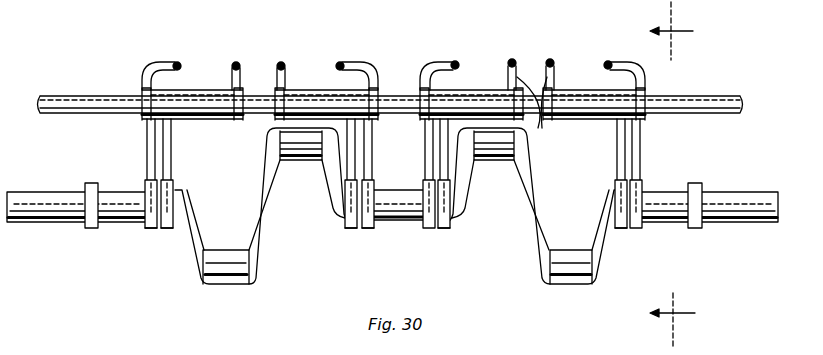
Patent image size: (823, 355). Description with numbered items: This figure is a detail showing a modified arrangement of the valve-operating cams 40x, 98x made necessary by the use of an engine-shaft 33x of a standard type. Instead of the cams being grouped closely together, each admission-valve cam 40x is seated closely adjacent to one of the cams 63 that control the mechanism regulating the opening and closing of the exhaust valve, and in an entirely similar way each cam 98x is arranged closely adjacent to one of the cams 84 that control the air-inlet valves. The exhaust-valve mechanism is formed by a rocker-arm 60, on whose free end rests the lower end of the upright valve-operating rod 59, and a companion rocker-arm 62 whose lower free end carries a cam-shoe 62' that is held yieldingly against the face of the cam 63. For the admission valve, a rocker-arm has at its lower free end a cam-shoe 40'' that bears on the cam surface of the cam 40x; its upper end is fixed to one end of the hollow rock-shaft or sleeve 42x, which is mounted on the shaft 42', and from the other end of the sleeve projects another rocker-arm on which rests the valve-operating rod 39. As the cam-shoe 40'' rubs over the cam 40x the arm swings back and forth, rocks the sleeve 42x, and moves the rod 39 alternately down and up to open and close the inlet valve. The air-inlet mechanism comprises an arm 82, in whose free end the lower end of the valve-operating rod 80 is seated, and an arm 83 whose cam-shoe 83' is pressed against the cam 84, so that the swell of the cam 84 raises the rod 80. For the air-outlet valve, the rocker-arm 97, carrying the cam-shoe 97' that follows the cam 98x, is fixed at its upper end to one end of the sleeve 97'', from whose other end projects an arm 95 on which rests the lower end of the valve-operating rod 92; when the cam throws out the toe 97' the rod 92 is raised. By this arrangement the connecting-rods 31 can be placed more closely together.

The shaft 42' is at (390, 90).
The hollow rock-shaft or sleeve 42x is at (190, 100).
The rocker-arm 60 is at (157, 75).
The valve-operating rod 59 is at (177, 61).
The arm 82 is at (447, 72).
The valve-operating rod 80 is at (456, 61).
The valve-operating rod 39 is at (280, 62).
The valve-operating rod 92 is at (549, 60).
The arm 95 is at (535, 112).
The connecting-rod 31 is at (682, 174).
The engine-shaft 33x is at (25, 200).
The cam 84 is at (424, 201).
The rocker-arm 62 is at (257, 149).
The cam-shoe 62' is at (257, 194).
The cam-shoe 40'' is at (267, 194).
The cam 63 is at (149, 229).
The cam 40x is at (166, 229).
The arm 83 is at (410, 149).
The rocker-arm 97 is at (532, 159).
The sleeve 97'' is at (557, 144).
The cam-shoe 83' is at (544, 207).
The cam-shoe 97' is at (532, 204).
The cam 98x is at (445, 229).